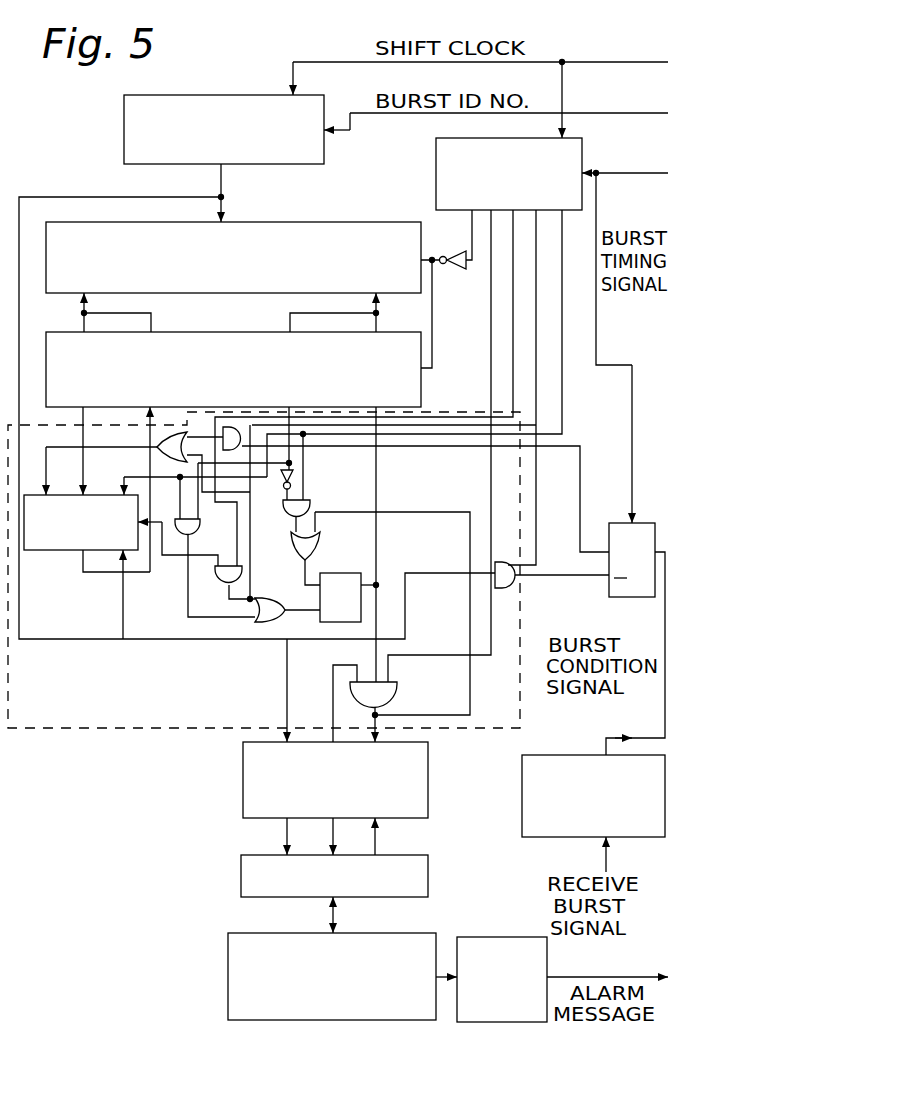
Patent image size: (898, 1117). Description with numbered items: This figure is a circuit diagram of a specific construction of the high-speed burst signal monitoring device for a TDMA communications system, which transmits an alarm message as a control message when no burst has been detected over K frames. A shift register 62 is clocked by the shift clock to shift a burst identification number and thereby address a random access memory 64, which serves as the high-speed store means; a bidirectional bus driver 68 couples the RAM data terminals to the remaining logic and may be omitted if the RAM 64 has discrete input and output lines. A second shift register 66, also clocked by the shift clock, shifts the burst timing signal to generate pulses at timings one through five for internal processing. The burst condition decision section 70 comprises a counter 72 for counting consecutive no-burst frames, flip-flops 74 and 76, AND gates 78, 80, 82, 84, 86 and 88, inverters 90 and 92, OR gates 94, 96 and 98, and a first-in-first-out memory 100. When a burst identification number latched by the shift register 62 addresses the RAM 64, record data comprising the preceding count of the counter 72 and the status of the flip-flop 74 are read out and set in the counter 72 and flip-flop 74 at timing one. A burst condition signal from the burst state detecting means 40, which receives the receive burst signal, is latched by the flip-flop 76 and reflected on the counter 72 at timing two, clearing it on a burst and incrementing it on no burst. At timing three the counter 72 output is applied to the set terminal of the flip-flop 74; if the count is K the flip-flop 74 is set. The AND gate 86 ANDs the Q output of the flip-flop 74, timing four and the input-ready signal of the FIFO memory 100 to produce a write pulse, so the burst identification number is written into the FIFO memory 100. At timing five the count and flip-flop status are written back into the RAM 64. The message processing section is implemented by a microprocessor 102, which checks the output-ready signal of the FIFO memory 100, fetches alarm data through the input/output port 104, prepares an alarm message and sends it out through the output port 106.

The shift register 62 is at (124, 122).
The shift register 66 is at (436, 153).
The random access memory (RAM) 64 is at (333, 222).
The bidirectional bus driver 68 is at (54, 333).
The inverter 90 is at (456, 270).
The counter 72 is at (33, 552).
The OR gate 94 is at (160, 456).
The AND gate 82 is at (235, 450).
The AND gate 78 is at (200, 531).
The AND gate 80 is at (218, 582).
The inverter 92 is at (294, 477).
The AND gate 84 is at (310, 506).
The OR gate 98 is at (293, 551).
The flip-flop 74 is at (345, 573).
The OR gate 96 is at (276, 624).
The AND gate 86 is at (397, 690).
The AND gate 88 is at (505, 590).
The flip-flop 76 is at (620, 523).
The burst condition decision section 70 is at (62, 728).
The first-in-first-out (FIFO) memory 100 is at (243, 797).
The input/output port 104 is at (334, 876).
The microprocessor 102 is at (228, 950).
The output port 106 is at (478, 937).
The burst state detecting means 40 is at (522, 798).